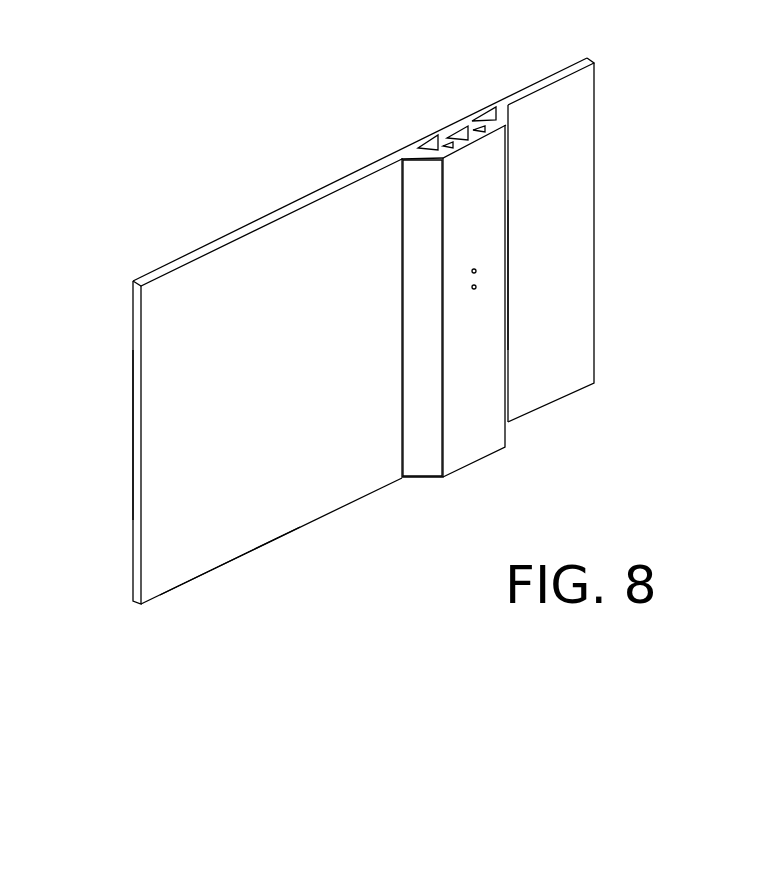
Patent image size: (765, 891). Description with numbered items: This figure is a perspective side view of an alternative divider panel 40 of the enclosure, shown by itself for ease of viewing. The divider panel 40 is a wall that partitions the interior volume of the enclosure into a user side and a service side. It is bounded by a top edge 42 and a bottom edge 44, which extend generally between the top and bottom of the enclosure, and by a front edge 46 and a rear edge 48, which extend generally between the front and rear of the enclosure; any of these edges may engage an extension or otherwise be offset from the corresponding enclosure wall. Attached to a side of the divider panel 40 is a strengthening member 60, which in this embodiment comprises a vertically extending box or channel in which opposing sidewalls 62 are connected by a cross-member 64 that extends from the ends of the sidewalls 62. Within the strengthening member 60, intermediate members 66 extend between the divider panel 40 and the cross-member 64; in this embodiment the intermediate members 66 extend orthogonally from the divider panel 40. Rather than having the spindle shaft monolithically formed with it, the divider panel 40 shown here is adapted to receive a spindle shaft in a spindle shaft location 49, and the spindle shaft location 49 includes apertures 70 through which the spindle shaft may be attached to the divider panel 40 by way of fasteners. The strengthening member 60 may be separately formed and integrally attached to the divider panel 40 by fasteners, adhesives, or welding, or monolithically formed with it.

The divider panel 40 is at (184, 224).
The top edge 42 is at (306, 196).
The bottom edge 44 is at (255, 556).
The front edge 46 is at (130, 430).
The rear edge 48 is at (598, 105).
The spindle shaft location 49 is at (512, 279).
The strengthening member 60 is at (406, 490).
The sidewalls 62 is at (415, 306).
The cross-member 64 is at (492, 219).
The intermediate members 66 is at (432, 146).
The apertures 70 is at (480, 268).